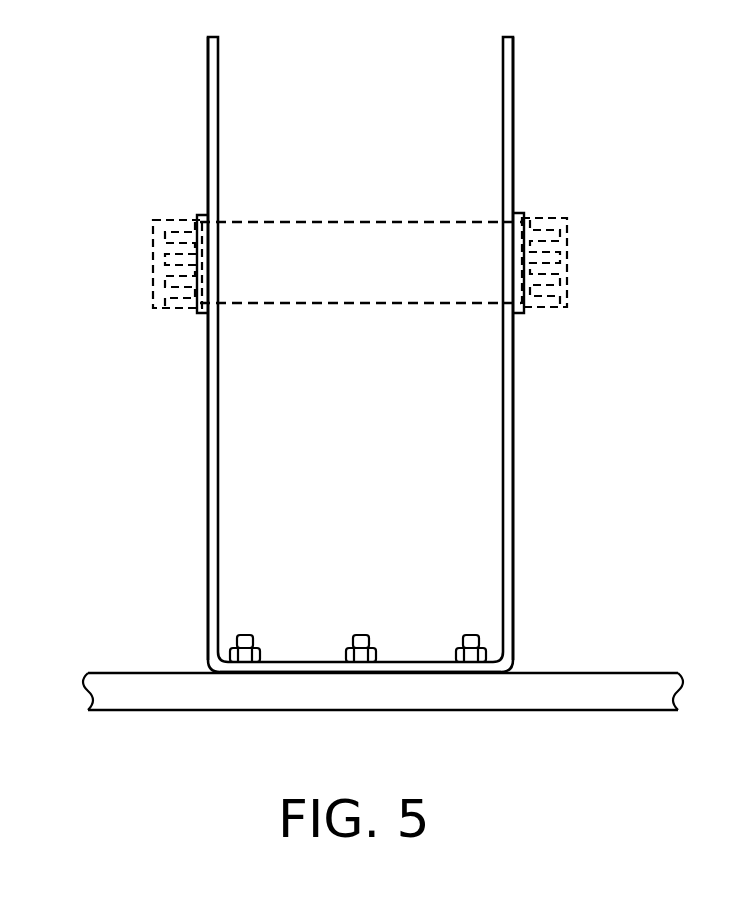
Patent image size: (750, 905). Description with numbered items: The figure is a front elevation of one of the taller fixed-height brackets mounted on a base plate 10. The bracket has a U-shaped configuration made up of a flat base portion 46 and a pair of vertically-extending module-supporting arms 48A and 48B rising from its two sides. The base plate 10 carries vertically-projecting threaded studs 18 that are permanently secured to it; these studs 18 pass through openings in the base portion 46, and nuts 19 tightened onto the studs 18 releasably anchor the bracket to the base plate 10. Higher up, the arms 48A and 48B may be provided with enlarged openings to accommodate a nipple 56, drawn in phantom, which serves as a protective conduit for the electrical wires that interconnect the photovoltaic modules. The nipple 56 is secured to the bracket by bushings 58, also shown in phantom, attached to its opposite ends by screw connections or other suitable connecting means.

The base plate 10 is at (135, 672).
The threaded stud 18 is at (245, 635).
The nut 19 is at (500, 665).
The base portion 46 is at (308, 668).
The arm 48A is at (513, 365).
The arm 48B is at (208, 378).
The nipple 56 is at (337, 220).
The bushing 58 is at (172, 220).